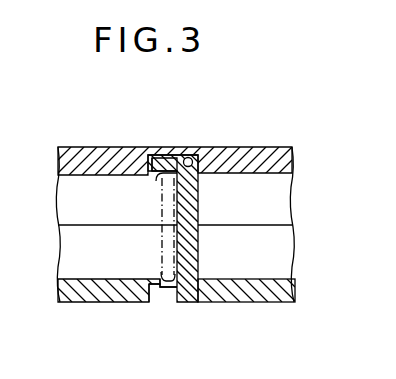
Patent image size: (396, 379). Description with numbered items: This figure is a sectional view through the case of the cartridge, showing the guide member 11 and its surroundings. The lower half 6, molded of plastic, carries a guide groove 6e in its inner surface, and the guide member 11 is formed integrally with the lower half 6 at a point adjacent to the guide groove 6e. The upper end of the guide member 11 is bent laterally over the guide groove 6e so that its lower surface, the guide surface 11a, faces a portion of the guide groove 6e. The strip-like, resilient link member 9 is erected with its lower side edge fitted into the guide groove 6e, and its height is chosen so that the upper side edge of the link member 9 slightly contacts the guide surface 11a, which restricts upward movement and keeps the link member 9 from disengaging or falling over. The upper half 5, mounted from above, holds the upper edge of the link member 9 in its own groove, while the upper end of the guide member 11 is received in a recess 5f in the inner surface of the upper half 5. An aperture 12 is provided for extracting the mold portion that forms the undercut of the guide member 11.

The upper half 5 is at (282, 138).
The recess 5f is at (201, 151).
The guide surface 11a is at (155, 177).
The link member 9 is at (176, 212).
The guide member 11 is at (203, 263).
The guide groove 6e is at (168, 281).
The aperture 12 is at (162, 297).
The lower half 6 is at (269, 306).